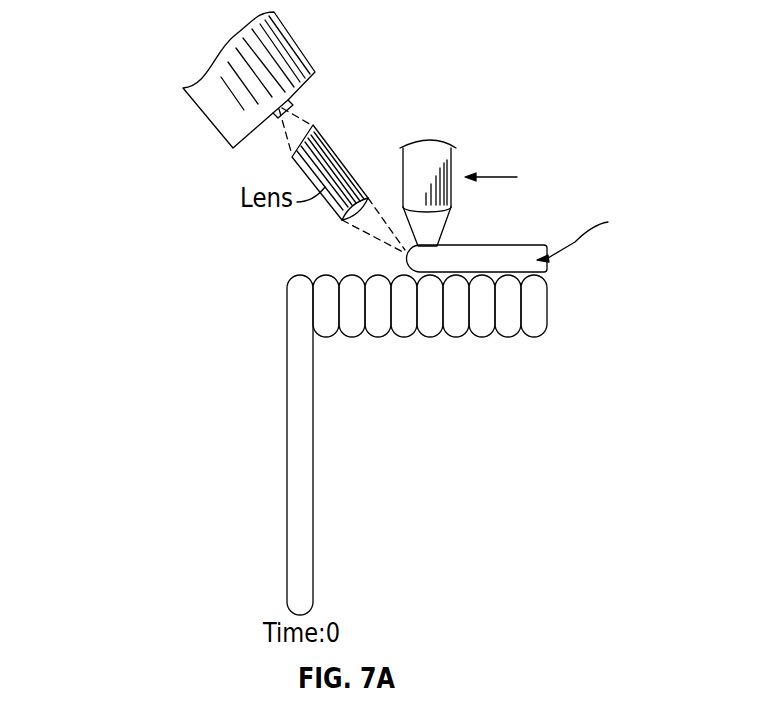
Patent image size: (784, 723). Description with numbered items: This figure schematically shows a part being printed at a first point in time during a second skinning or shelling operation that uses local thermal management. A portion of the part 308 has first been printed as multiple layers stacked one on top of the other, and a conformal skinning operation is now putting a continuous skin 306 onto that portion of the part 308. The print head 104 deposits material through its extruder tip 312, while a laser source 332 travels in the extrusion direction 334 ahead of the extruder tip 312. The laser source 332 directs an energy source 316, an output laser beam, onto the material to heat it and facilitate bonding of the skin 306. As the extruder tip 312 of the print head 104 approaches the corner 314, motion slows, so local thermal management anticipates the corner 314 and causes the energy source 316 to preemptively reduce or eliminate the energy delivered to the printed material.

The laser source 332 is at (218, 112).
The print head 104 is at (420, 160).
The extruder tip 312 is at (427, 238).
The extrusion direction 334 is at (510, 177).
The continuous skin 306 is at (518, 262).
The portion of the part 308 is at (430, 326).
The corner 314 is at (300, 288).
The energy source 316 is at (388, 240).